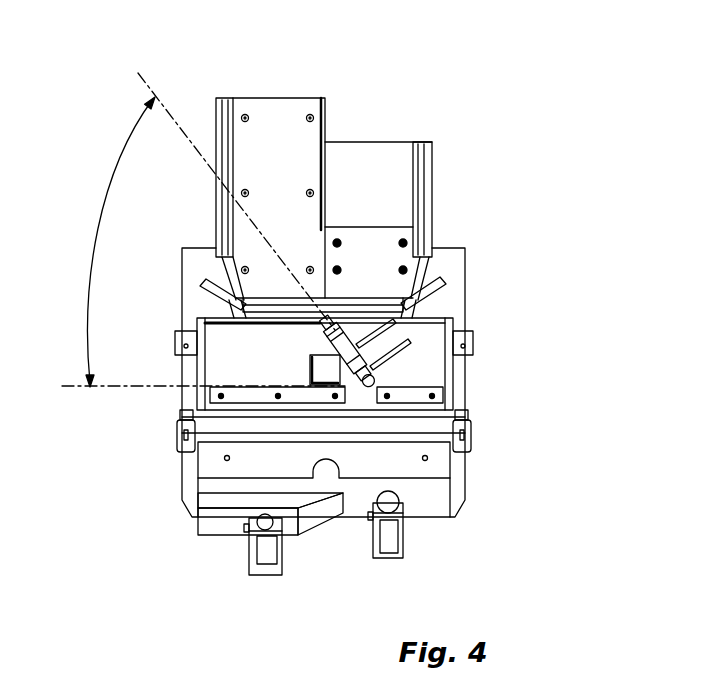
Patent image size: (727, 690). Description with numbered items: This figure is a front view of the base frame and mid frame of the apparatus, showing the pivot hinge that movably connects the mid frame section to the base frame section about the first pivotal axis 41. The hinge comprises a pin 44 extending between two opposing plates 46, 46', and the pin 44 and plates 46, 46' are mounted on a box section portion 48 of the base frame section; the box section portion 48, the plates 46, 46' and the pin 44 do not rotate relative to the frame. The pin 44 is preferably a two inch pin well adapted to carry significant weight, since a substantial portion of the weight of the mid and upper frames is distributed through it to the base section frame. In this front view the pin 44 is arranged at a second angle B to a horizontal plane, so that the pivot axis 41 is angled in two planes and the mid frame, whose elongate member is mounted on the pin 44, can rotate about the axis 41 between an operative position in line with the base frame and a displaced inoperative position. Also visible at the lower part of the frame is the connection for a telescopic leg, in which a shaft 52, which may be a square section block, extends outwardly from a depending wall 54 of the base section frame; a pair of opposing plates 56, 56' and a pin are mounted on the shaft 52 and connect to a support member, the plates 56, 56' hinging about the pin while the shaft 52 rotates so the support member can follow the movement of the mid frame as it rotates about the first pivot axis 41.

The first pivotal axis 41 is at (182, 133).
The pin 44 is at (405, 343).
The plate 46 is at (243, 252).
The plate 46' is at (470, 382).
The box section portion 48 is at (310, 362).
The shaft 52 is at (258, 522).
The depending wall 54 is at (440, 494).
The plate 56 is at (225, 560).
The plate 56' is at (342, 546).
The second angle B is at (203, 242).